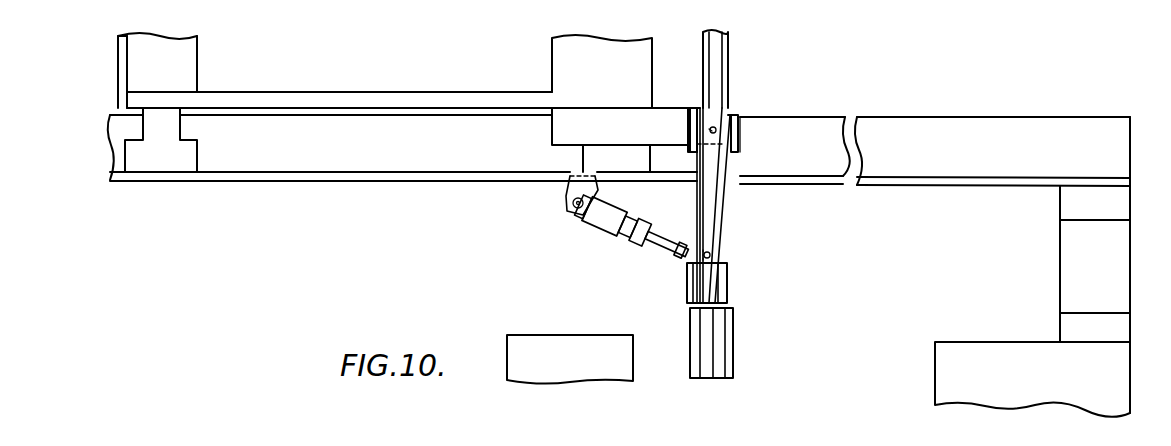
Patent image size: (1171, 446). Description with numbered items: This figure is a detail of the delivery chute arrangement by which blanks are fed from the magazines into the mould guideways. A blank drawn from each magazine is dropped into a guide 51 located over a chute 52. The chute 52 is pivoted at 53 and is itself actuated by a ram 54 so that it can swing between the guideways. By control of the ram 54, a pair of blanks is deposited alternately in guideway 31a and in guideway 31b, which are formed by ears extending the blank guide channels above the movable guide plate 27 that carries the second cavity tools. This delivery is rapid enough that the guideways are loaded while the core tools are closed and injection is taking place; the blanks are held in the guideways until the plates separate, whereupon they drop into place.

The movable guide plate 27 is at (718, 340).
The guideway 31a is at (722, 345).
The guideway 31b is at (703, 357).
The guide 51 is at (735, 45).
The chute 52 is at (716, 203).
The pivot 53 is at (738, 130).
The ram 54 is at (650, 237).